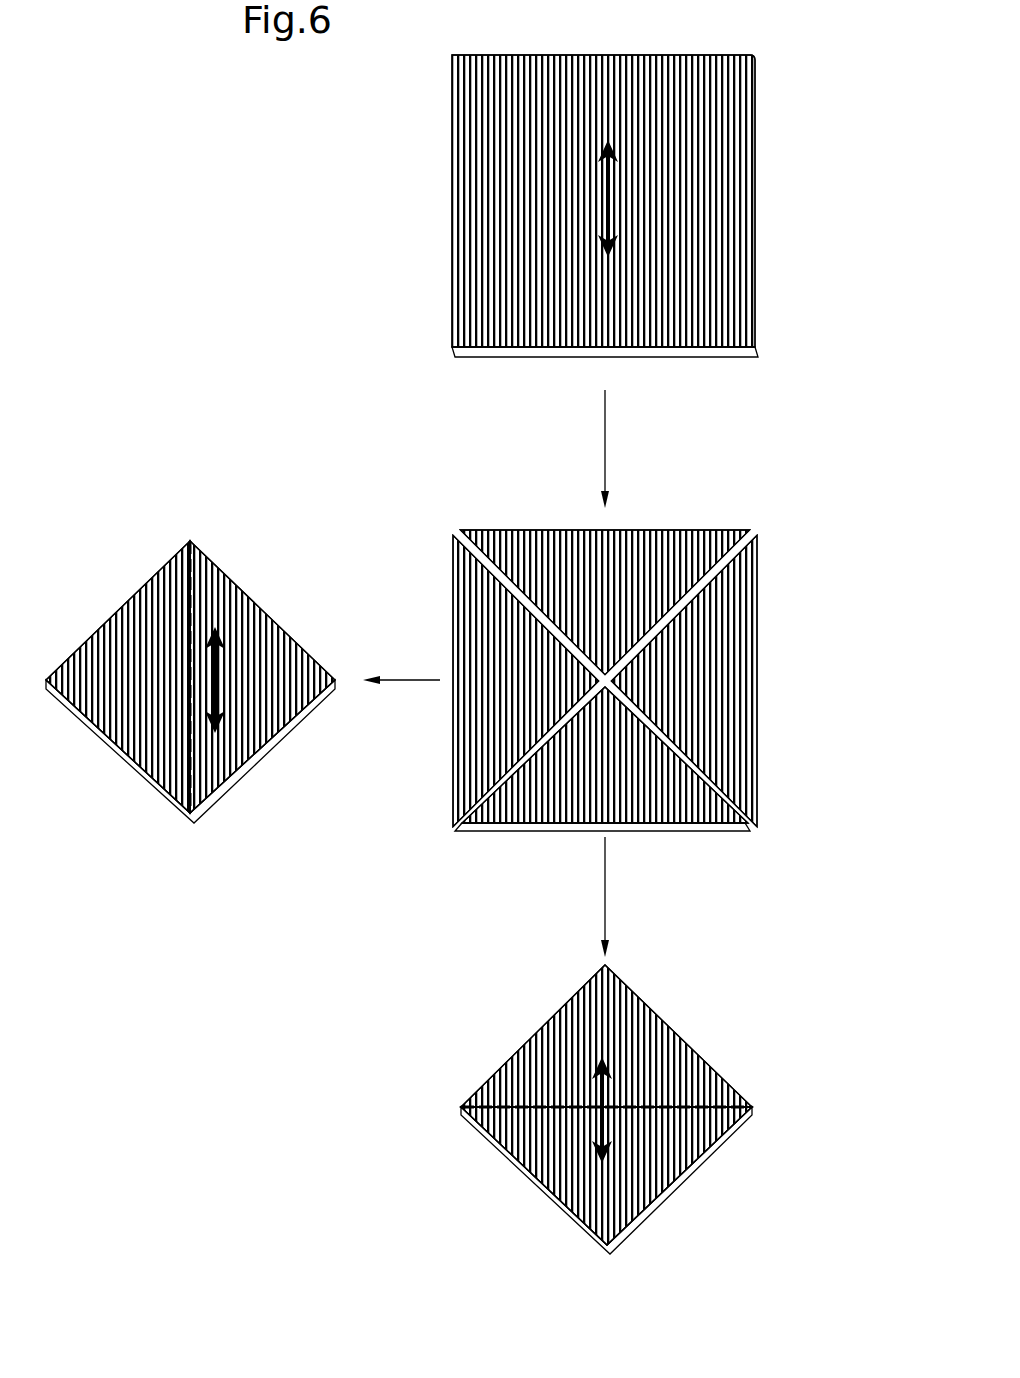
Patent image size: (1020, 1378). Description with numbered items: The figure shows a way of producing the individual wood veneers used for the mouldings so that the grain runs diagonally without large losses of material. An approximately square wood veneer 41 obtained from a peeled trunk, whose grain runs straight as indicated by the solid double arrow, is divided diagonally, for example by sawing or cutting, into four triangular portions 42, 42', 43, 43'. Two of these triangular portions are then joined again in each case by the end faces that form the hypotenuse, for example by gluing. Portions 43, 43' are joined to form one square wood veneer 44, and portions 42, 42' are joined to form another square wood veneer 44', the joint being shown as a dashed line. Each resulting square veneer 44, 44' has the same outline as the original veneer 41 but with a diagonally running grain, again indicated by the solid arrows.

The wood veneer 41 is at (452, 211).
The triangular portion 42 is at (606, 857).
The triangular portion 42' is at (603, 897).
The triangular portion 43 is at (394, 686).
The triangular portion 43' is at (428, 680).
The square wood veneer 44 is at (190, 673).
The square wood veneer 44' is at (585, 1155).